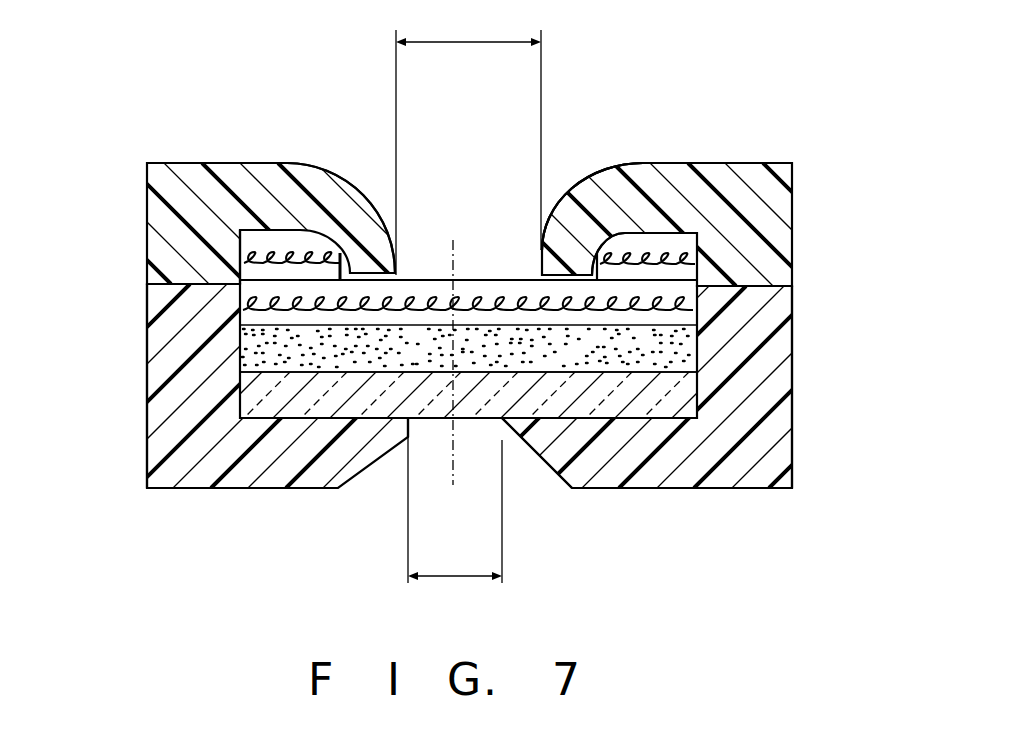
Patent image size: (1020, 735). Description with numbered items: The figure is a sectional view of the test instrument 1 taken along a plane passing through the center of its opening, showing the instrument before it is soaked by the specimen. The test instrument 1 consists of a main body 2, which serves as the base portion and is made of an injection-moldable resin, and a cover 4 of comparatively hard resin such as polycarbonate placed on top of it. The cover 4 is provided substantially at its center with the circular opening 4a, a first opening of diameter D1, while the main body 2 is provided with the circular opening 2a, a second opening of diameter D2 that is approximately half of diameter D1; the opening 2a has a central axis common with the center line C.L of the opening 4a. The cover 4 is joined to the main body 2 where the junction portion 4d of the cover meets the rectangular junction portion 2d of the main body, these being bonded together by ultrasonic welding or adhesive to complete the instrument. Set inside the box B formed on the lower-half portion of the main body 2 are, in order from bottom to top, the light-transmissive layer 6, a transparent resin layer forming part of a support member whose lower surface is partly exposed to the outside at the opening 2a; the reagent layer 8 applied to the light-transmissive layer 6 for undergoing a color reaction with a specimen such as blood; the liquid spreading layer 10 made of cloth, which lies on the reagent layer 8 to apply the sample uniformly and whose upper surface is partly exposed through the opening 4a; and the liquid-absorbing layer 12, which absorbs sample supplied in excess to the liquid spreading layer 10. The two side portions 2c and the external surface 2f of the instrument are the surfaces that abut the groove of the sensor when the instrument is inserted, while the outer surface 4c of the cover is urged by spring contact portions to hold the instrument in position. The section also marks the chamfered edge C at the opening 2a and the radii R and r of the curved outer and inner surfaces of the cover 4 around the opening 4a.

The test instrument 1 is at (226, 496).
The main body 2 is at (160, 470).
The opening 2a is at (411, 430).
The side portions 2c is at (147, 398).
The junction portion 2d is at (175, 286).
The external surface 2f is at (718, 488).
The cover 4 is at (170, 177).
The opening 4a is at (396, 270).
The outer surface 4c is at (223, 163).
The junction portion 4d is at (150, 276).
The light-transmissive layer 6 is at (614, 405).
The reagent layer 8 is at (480, 360).
The liquid spreading layer 10 is at (424, 298).
The liquid-absorbing layer 12 is at (302, 248).
The box B is at (676, 399).
The chamfer C is at (552, 487).
The outer radius R is at (574, 182).
The inner radius r is at (650, 252).
The diameter of cover opening D1 is at (468, 143).
The diameter of main body opening D2 is at (455, 591).
The center line C.L is at (454, 486).